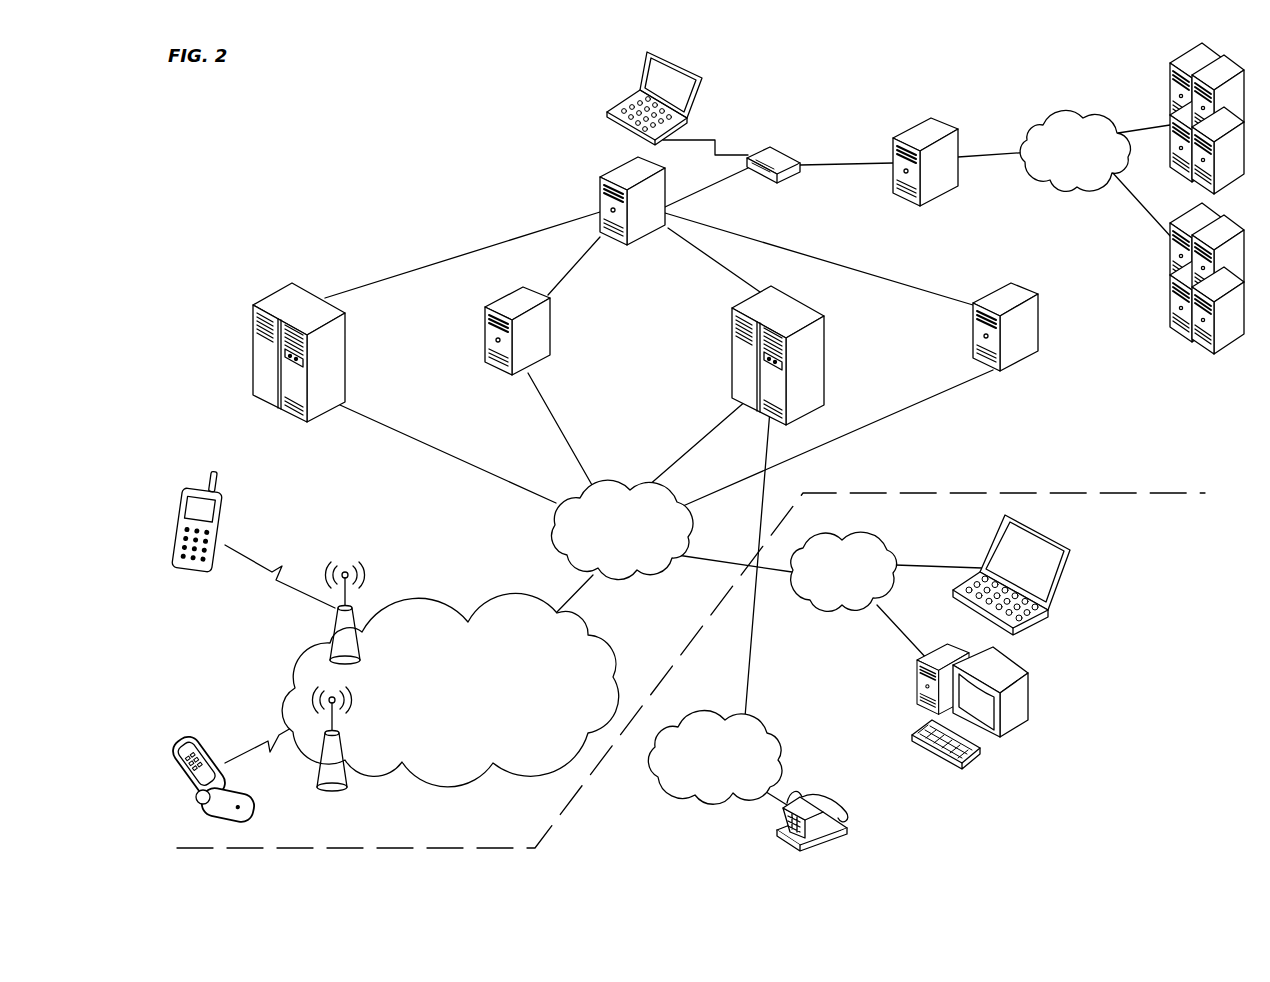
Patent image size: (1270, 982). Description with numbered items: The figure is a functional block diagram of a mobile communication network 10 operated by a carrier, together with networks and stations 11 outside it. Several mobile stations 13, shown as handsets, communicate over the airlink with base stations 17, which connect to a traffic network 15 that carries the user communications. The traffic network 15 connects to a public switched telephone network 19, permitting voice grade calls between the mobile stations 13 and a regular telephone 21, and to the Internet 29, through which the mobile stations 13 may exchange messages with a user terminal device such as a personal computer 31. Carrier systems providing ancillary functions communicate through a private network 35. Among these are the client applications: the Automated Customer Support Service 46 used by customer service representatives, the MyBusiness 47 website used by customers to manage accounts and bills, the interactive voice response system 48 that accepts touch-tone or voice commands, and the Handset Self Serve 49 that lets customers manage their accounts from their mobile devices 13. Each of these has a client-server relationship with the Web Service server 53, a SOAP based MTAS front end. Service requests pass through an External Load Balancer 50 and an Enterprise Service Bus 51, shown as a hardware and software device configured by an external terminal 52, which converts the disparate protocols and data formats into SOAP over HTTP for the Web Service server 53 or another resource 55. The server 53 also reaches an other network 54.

The mobile communication network 10 is at (312, 117).
The networks and stations outside the mobile communication network 11 is at (691, 670).
The mobile stations 13 is at (225, 505).
The traffic network 15 is at (400, 604).
The base stations 17 is at (330, 648).
The public switched telephone network 19 is at (785, 745).
The telephone 21 is at (845, 832).
The Internet 29 is at (808, 603).
The personal computer 31 is at (1052, 612).
The private network 35 is at (555, 540).
The Automated Customer Support Service 46 is at (307, 424).
The MyBusiness application 47 is at (545, 362).
The interactive voice response system 48 is at (786, 316).
The Handset Self Serve application 49 is at (1037, 355).
The External Load Balancer 50 is at (630, 247).
The Enterprise Service Bus 51 is at (790, 183).
The external terminal 52 is at (640, 70).
The Web Service server 53 is at (900, 116).
The other network 54 is at (1040, 120).
The other resource 55 is at (1170, 80).